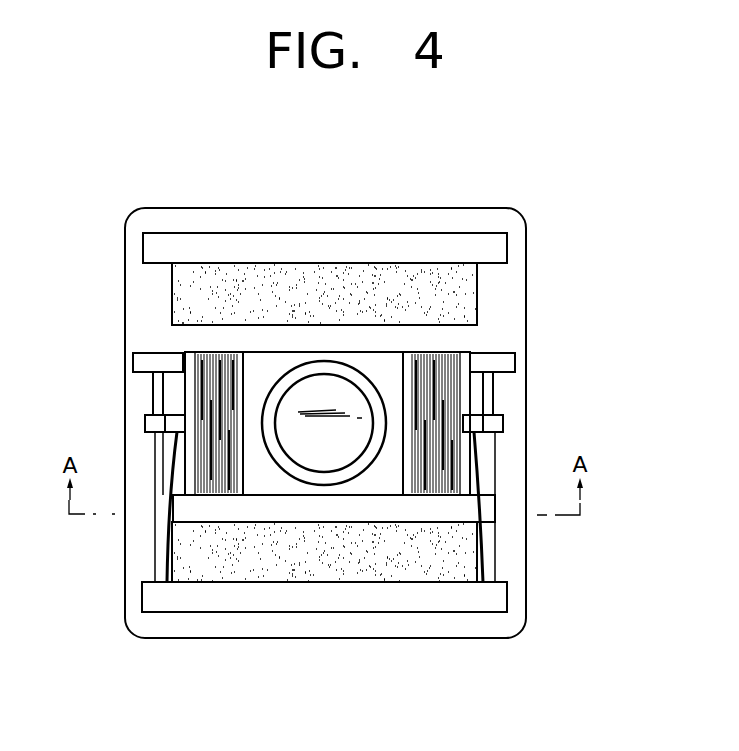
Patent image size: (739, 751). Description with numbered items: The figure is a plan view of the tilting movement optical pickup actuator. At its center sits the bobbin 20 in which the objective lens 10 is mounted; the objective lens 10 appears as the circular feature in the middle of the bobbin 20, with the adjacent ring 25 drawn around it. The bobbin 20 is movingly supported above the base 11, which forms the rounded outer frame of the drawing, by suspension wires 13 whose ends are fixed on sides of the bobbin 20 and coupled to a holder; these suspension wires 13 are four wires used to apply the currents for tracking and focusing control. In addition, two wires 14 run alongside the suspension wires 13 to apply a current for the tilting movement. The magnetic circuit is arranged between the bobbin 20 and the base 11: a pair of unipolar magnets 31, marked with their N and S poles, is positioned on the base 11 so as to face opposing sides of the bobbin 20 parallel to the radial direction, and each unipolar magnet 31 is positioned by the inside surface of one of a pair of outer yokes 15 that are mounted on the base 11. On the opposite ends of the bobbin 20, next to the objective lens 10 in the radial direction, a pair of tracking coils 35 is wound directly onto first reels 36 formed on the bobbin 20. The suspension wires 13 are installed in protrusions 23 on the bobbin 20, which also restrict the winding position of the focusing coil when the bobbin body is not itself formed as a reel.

The objective lens 10 is at (312, 408).
The base 11 is at (508, 627).
The suspension wires 13 is at (155, 442).
The wires 14 is at (167, 552).
The outer yokes 15 is at (500, 248).
The bobbin 20 is at (390, 370).
The protrusions 23 is at (497, 420).
The rotor ring 25 is at (357, 377).
The unipolar magnets 31 is at (470, 297).
The tracking coils 35 is at (200, 385).
The first reels 36 is at (188, 352).